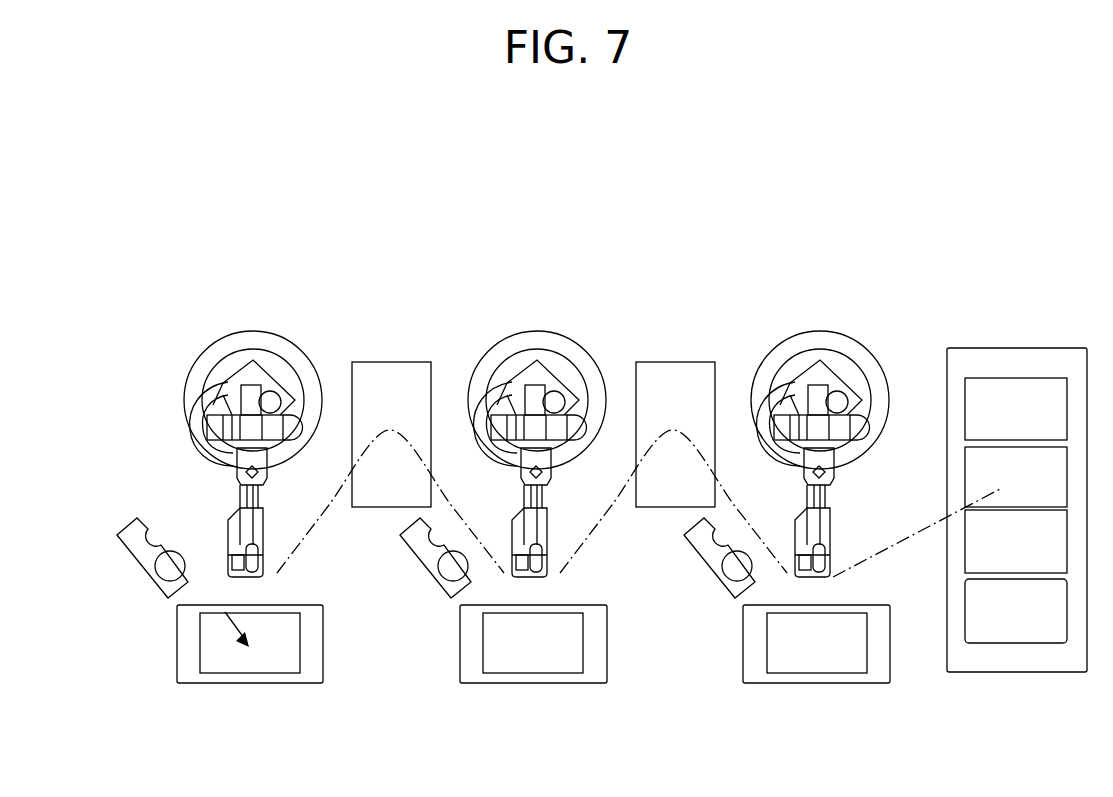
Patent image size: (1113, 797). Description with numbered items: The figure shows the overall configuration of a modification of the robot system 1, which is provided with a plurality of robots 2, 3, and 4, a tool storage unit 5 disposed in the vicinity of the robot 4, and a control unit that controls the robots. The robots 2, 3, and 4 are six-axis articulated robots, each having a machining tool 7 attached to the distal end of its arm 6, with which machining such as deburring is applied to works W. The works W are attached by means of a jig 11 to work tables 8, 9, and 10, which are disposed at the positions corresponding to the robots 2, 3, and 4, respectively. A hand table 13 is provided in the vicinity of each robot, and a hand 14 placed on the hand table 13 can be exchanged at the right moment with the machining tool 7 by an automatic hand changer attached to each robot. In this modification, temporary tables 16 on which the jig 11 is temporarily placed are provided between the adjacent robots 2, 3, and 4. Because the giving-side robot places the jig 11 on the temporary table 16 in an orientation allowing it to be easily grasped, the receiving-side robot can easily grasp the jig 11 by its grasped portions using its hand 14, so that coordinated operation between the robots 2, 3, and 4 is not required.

The robot system 1 is at (740, 192).
The robot 2 is at (290, 322).
The robot 3 is at (574, 322).
The robot 4 is at (857, 322).
The tool storage unit 5 is at (1029, 310).
The arm 6 is at (228, 537).
The machining tool 7 is at (262, 567).
The work table 8 is at (216, 684).
The work table 9 is at (500, 684).
The work table 10 is at (784, 684).
The jig 11 is at (274, 684).
The hand table 13 is at (120, 555).
The hand 14 is at (152, 580).
The temporary table 16 is at (390, 362).